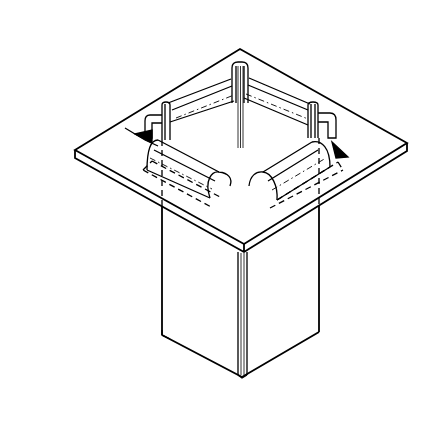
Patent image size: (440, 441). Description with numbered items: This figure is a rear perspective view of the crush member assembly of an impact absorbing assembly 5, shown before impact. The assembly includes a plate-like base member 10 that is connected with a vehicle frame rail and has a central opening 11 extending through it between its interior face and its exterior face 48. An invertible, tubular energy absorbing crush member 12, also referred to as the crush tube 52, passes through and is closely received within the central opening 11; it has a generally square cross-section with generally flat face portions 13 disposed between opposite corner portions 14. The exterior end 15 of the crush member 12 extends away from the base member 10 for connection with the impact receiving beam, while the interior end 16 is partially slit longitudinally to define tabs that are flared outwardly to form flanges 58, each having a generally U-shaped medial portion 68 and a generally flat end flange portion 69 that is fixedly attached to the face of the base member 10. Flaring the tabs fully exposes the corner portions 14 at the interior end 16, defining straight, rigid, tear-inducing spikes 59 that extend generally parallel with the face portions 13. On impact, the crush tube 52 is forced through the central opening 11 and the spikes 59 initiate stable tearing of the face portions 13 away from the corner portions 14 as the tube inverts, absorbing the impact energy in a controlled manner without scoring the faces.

The impact absorbing assembly 5 is at (66, 148).
The base member 10 is at (254, 71).
The central opening 11 is at (340, 130).
The crush member 12 is at (320, 331).
The face portions 13 is at (173, 282).
The corner portions 14 is at (246, 338).
The exterior end 15 is at (246, 383).
The interior end 16 is at (230, 64).
The exterior face 48 is at (128, 130).
The crush tube 52 is at (162, 336).
The flanges 58 is at (154, 155).
The tear-inducing spikes 59 is at (164, 103).
The U-shaped medial portion 68 is at (328, 156).
The end flange portion 69 is at (145, 190).